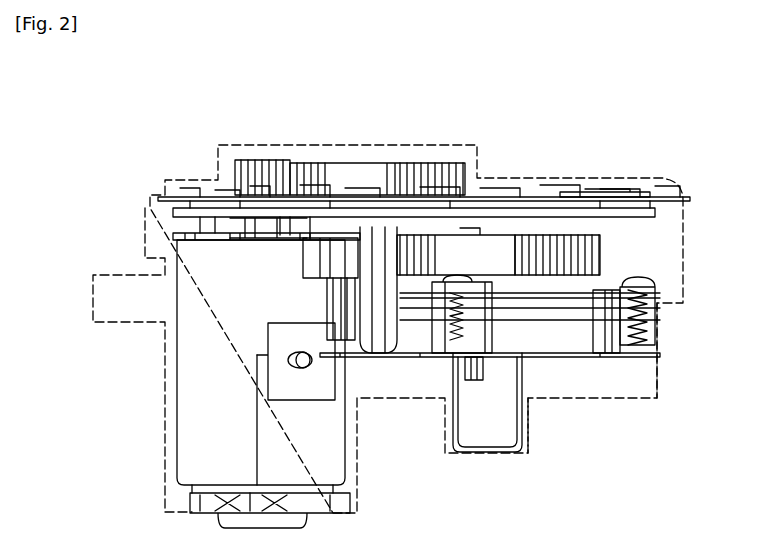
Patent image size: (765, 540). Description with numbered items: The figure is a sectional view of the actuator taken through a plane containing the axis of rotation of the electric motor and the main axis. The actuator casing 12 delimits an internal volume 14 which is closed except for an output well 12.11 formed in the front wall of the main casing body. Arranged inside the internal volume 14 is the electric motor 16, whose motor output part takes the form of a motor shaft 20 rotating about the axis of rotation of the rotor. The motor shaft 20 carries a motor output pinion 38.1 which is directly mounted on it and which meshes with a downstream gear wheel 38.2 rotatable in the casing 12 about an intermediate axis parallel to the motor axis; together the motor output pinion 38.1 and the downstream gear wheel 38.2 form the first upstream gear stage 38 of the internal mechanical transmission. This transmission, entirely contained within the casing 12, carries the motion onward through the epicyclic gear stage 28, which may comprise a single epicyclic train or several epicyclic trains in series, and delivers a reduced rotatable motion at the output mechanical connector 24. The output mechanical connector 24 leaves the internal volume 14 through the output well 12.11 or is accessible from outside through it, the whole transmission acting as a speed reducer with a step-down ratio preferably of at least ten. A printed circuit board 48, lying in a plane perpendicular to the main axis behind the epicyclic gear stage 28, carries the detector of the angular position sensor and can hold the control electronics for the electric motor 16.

The actuator casing 12 is at (158, 398).
The output well 12.11 is at (528, 427).
The internal volume 14 is at (627, 370).
The electric motor 16 is at (190, 437).
The motor shaft 20 is at (235, 202).
The output mechanical connector 24 is at (488, 438).
The epicyclic gear stage 28 is at (620, 250).
The first upstream gear stage 38 is at (350, 123).
The motor output pinion 38.1 is at (258, 140).
The downstream gear wheel 38.2 is at (377, 147).
The printed circuit board 48 is at (600, 197).